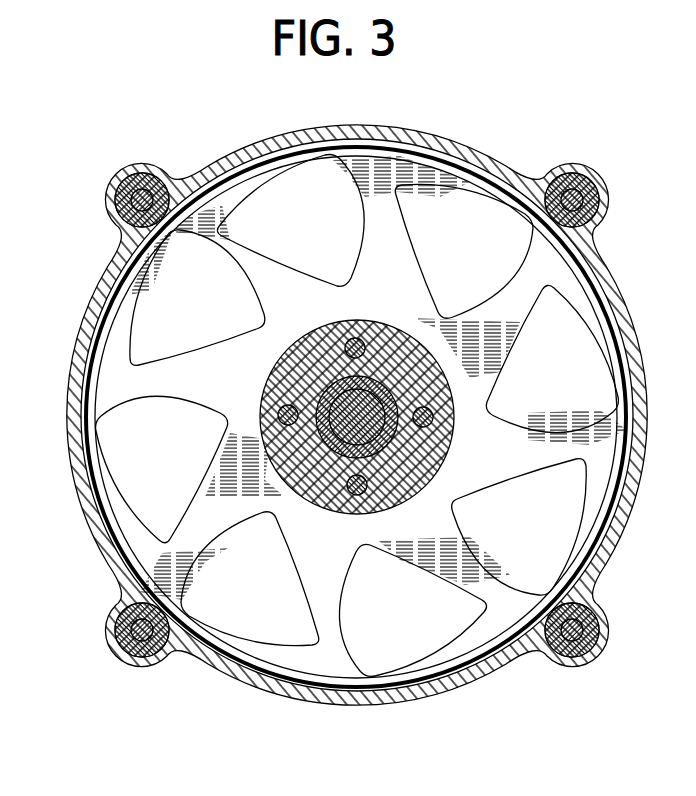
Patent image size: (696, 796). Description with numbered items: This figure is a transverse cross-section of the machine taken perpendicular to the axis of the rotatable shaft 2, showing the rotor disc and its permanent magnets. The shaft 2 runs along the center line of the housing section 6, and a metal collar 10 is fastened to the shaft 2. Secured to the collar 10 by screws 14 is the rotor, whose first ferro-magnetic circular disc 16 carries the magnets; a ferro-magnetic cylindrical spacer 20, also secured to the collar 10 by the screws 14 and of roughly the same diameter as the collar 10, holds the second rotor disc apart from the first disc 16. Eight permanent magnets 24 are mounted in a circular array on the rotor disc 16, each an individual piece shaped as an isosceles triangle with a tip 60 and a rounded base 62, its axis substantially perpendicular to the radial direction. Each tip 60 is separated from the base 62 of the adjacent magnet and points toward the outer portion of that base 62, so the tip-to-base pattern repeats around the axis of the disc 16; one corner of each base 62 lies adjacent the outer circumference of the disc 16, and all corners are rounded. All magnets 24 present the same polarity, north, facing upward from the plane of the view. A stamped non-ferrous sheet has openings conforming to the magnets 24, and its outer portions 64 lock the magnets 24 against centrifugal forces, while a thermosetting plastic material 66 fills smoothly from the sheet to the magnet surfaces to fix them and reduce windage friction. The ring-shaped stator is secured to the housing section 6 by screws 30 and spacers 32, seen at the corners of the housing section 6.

The rotatable shaft 2 is at (336, 448).
The housing section 6 is at (98, 290).
The metal collar 10 is at (330, 440).
The screws 14 is at (345, 350).
The first ferro-magnetic circular disc 16 is at (355, 142).
The ferro-magnetic cylindrical spacer 20 is at (425, 442).
The permanent magnets 24 is at (257, 210).
The screws 30 is at (118, 181).
The spacers 32 is at (143, 173).
The tip 60 is at (419, 187).
The base 62 is at (524, 258).
The outer portions of sheet 64 is at (122, 514).
The thermosetting plastic material 66 is at (306, 310).